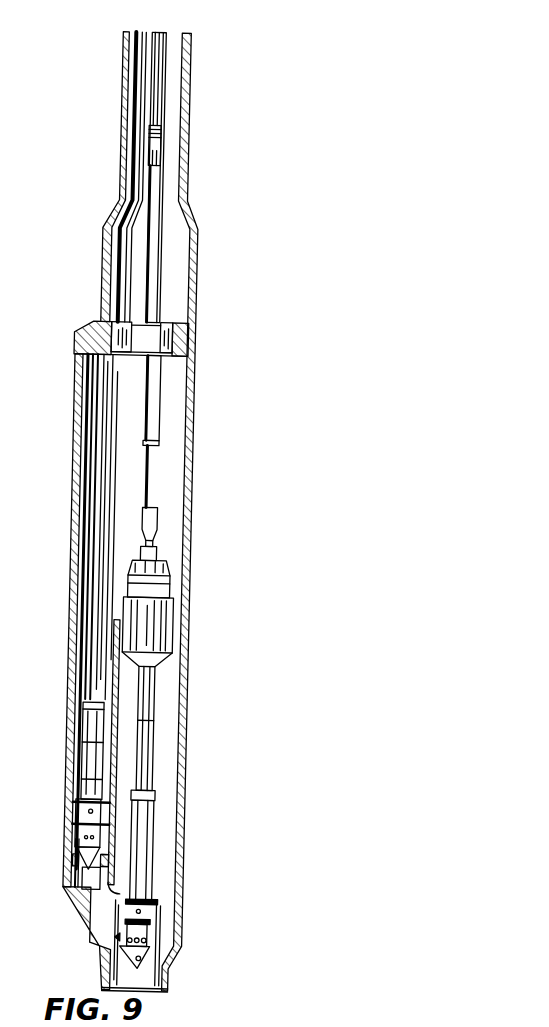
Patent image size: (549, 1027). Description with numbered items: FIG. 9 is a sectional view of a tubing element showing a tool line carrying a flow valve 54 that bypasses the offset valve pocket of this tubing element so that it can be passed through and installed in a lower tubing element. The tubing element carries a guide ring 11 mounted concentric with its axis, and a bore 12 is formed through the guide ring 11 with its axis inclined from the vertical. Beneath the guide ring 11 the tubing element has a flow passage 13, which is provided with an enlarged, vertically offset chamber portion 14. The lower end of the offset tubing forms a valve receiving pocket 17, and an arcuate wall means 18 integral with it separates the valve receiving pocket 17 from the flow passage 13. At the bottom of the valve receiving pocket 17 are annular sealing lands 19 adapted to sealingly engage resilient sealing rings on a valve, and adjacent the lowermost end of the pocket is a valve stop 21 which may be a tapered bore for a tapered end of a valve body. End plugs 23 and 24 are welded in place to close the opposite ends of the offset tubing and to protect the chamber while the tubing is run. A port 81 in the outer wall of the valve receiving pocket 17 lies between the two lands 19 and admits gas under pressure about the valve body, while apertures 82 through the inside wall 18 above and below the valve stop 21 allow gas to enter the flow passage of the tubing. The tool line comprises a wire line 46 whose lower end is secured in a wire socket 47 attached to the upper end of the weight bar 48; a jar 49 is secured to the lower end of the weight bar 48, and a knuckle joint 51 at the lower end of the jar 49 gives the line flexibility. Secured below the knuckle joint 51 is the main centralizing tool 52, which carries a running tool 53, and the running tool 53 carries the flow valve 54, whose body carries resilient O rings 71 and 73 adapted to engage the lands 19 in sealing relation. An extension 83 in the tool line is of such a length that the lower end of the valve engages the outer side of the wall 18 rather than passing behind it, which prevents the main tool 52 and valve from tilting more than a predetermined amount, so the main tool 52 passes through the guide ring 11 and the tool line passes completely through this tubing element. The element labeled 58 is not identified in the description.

The guide ring 11 is at (172, 346).
The bore 12 is at (168, 330).
The flow passage 13 is at (172, 470).
The offset chamber portion 14 is at (98, 448).
The valve receiving pocket 17 is at (82, 768).
The arcuate wall means 18 is at (112, 672).
The annular sealing lands 19 is at (72, 828).
The valve stop 21 is at (72, 858).
The end plug 23 is at (93, 321).
The end plug 24 is at (88, 895).
The wire line 46 is at (158, 92).
The wire socket 47 is at (163, 154).
The weight bar 48 is at (166, 258).
The jar 49 is at (160, 398).
The knuckle joint 51 is at (158, 528).
The main centralizing tool 52 is at (172, 590).
The running tool 53 is at (157, 690).
The flow valve 54 is at (90, 730).
The piston body 58 is at (172, 637).
The resilient O ring 71 is at (100, 925).
The resilient O ring 73 is at (150, 925).
The port 81 is at (68, 812).
The apertures 82 is at (150, 887).
The extension 83 is at (157, 758).